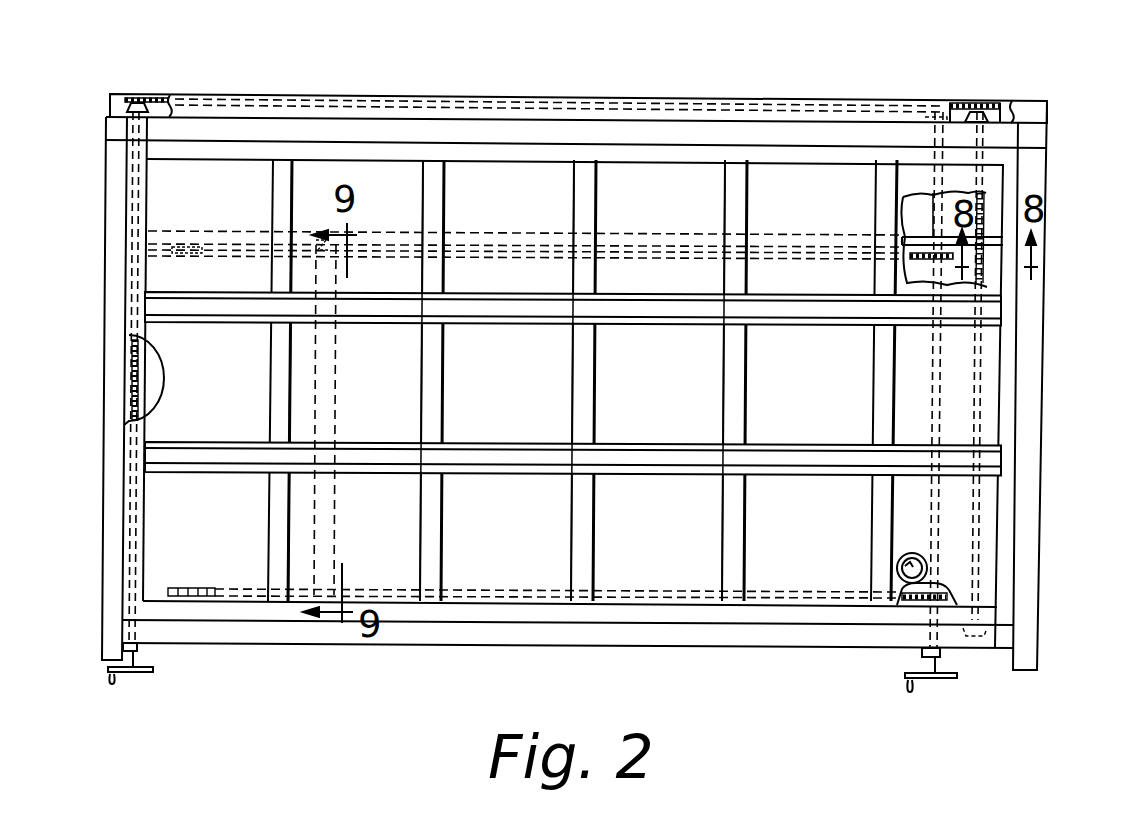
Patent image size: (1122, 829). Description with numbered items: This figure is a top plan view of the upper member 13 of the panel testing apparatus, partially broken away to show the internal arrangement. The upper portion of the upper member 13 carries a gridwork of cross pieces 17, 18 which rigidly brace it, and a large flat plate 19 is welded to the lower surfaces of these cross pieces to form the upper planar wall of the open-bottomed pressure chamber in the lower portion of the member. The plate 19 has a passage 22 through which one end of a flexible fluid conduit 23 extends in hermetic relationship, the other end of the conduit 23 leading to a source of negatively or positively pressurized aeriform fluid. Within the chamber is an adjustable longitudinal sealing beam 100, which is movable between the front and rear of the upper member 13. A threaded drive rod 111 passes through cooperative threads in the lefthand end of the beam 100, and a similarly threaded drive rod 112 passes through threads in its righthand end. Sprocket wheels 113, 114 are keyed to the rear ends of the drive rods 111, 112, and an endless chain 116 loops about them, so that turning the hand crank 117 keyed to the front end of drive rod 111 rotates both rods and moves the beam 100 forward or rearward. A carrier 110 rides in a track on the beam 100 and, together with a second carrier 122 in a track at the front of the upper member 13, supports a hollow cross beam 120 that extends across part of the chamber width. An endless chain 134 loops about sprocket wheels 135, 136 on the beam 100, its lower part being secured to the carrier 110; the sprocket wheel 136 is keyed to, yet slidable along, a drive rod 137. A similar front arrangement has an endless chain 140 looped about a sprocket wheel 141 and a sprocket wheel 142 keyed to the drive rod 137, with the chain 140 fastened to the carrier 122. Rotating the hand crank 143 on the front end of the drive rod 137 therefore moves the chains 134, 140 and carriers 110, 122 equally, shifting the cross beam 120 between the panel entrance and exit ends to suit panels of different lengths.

The upper member 13 is at (600, 97).
The cross piece 17 is at (497, 440).
The cross piece 18 is at (722, 382).
The flat plate 19 is at (816, 406).
The passage 22 is at (910, 562).
The fluid conduit 23 is at (897, 568).
The sealing beam 100 is at (903, 222).
The carrier 110 is at (300, 251).
The drive rod 111 is at (138, 378).
The drive rod 112 is at (983, 208).
The sprocket wheel 113 is at (138, 101).
The sprocket wheel 114 is at (977, 104).
The endless chain 116 is at (166, 97).
The hand crank 117 is at (140, 672).
The hollow cross beam 120 is at (322, 390).
The carrier 122 is at (318, 593).
The endless chain 134 is at (670, 258).
The sprocket wheel 135 is at (205, 250).
The sprocket wheel 136 is at (910, 265).
The drive rod 137 is at (930, 207).
The endless chain 140 is at (503, 590).
The sprocket wheel 141 is at (188, 597).
The sprocket wheel 142 is at (923, 600).
The hand crank 143 is at (943, 678).